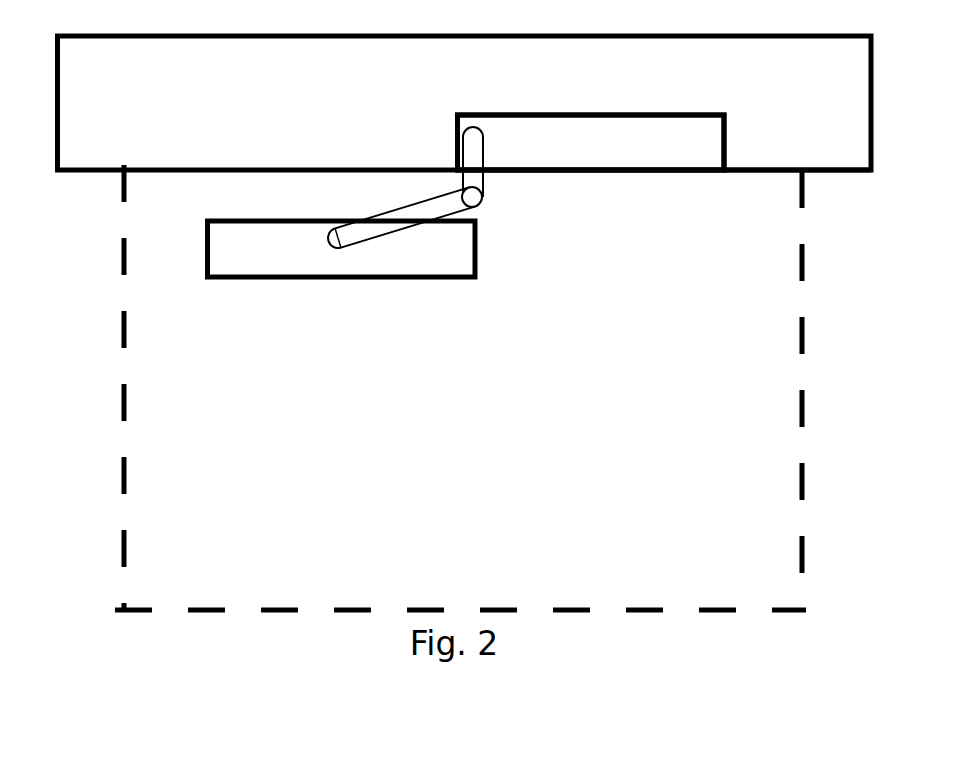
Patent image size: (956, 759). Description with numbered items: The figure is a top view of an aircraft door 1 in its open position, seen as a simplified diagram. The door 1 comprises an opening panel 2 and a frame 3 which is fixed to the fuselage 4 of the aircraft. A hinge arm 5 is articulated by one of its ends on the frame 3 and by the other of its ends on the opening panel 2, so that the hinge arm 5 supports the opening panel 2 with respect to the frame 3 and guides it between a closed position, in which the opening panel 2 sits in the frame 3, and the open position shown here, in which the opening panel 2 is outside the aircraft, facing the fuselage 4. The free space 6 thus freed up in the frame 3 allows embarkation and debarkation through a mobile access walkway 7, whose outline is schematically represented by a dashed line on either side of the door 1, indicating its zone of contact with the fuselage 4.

The door 1 is at (408, 148).
The opening panel 2 is at (253, 262).
The frame 3 is at (728, 148).
The fuselage 4 is at (790, 150).
The hinge arm 5 is at (474, 197).
The free space 6 is at (600, 152).
The mobile access walkway 7 is at (128, 473).